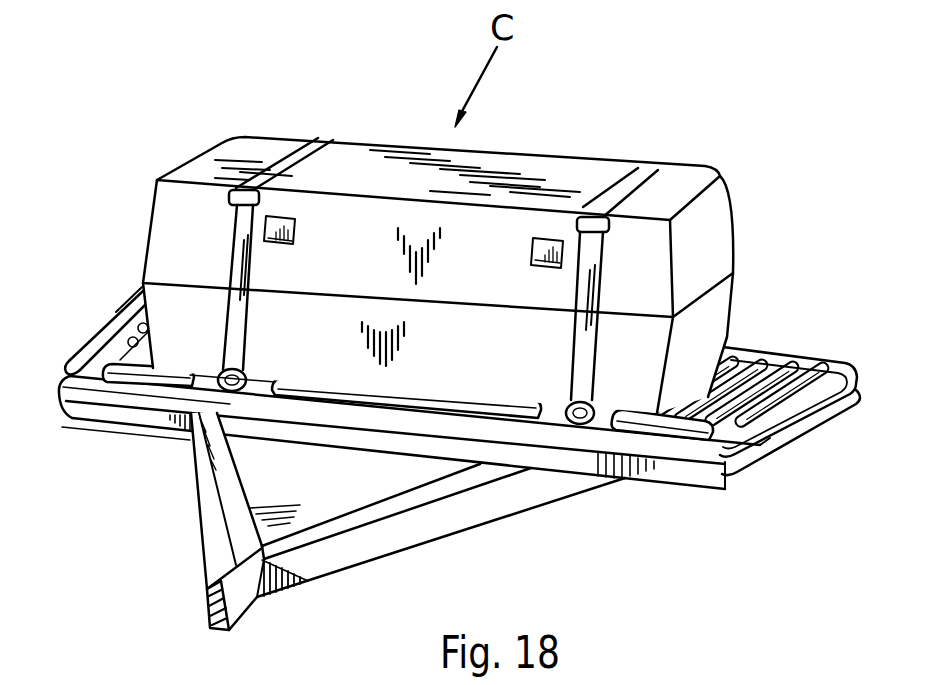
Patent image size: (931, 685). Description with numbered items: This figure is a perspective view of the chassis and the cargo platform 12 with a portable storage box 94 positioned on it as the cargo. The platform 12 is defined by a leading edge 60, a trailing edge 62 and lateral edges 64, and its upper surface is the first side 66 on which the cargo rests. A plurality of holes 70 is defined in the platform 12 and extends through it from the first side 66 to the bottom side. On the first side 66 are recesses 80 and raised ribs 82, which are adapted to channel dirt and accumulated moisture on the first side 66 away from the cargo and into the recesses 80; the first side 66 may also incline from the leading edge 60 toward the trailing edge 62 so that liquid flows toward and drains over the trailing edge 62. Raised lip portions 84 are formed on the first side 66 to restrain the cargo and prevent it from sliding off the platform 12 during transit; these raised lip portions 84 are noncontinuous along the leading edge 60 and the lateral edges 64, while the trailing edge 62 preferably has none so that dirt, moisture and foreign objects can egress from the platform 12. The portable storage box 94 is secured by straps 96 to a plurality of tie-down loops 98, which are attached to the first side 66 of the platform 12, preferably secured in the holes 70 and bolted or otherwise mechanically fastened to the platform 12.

The platform 12 is at (826, 358).
The leading edge 60 is at (270, 428).
The trailing edge 62 is at (817, 345).
The lateral edges 64 is at (808, 408).
The first side 66 is at (121, 354).
The holes 70 is at (116, 312).
The recesses 80 is at (764, 356).
The raised ribs 82 is at (752, 350).
The raised lip portions 84 is at (765, 415).
The portable storage box 94 is at (708, 232).
The straps 96 is at (343, 97).
The tie-down loops 98 is at (195, 398).